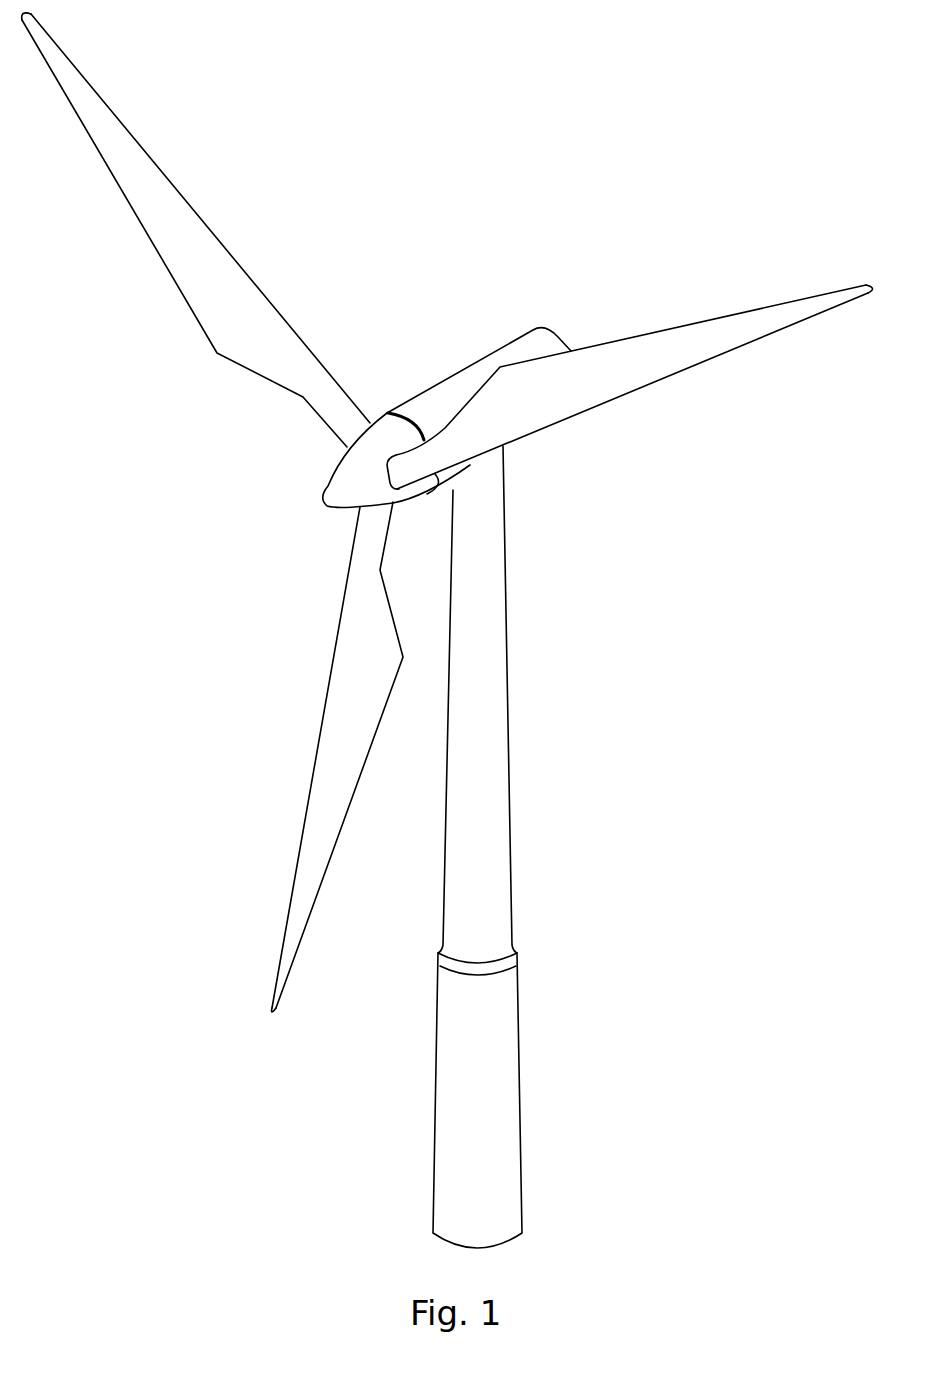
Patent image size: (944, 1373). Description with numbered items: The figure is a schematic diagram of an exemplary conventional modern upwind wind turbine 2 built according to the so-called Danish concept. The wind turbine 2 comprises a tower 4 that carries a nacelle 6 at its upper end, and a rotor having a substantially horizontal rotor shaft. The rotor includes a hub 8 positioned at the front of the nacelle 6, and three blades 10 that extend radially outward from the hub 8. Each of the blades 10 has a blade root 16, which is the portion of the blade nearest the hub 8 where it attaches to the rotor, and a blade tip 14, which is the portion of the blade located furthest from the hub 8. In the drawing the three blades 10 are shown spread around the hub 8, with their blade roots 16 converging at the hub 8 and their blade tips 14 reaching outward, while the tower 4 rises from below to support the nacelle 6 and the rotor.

The wind turbine 2 is at (612, 777).
The tower 4 is at (497, 703).
The nacelle 6 is at (440, 393).
The hub 8 is at (347, 482).
The blades 10 is at (230, 327).
The blade tip 14 is at (70, 72).
The blade root 16 is at (354, 434).